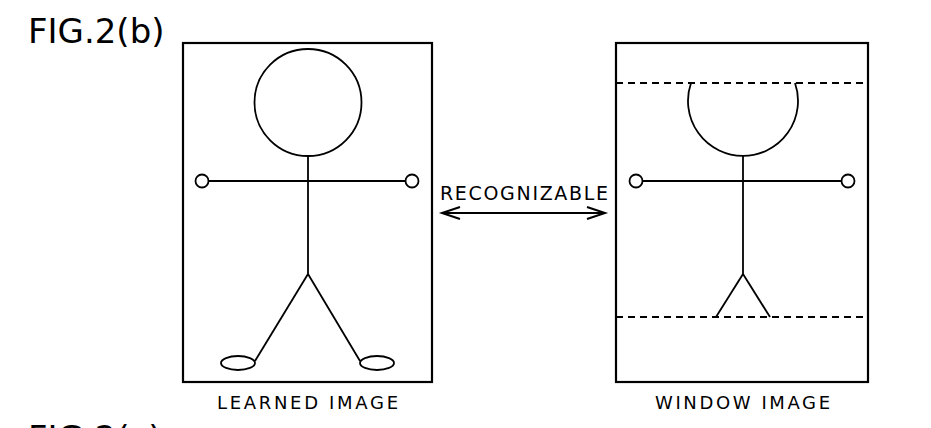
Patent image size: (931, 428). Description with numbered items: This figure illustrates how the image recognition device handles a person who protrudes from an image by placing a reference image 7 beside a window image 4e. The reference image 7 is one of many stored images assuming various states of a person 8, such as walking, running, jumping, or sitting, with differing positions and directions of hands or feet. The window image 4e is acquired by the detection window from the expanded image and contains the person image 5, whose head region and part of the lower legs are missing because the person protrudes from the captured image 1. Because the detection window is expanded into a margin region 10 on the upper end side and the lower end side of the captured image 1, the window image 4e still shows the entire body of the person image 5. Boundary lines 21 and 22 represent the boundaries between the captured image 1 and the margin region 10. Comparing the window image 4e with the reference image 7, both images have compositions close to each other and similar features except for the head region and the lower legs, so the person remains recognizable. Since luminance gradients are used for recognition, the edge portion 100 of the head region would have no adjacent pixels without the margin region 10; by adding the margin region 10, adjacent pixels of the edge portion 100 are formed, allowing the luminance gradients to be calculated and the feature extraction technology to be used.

The reference image 7 is at (432, 75).
The person 8 is at (308, 236).
The window image 4e is at (805, 43).
The boundary line 21 is at (612, 88).
The boundary line 22 is at (613, 309).
The edge portion 100 is at (743, 77).
The person image 5 is at (743, 232).
The captured image 1 is at (634, 257).
The margin region 10 is at (634, 65).